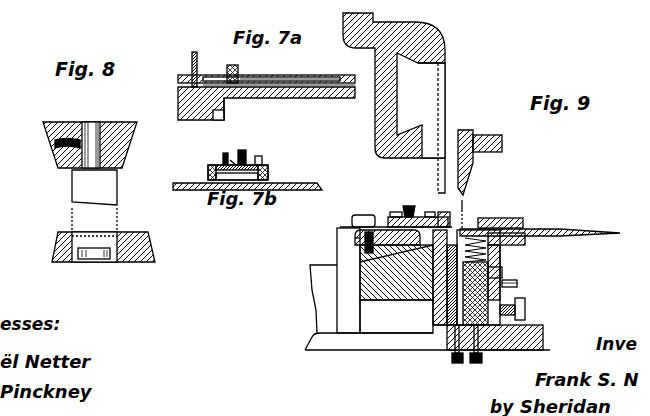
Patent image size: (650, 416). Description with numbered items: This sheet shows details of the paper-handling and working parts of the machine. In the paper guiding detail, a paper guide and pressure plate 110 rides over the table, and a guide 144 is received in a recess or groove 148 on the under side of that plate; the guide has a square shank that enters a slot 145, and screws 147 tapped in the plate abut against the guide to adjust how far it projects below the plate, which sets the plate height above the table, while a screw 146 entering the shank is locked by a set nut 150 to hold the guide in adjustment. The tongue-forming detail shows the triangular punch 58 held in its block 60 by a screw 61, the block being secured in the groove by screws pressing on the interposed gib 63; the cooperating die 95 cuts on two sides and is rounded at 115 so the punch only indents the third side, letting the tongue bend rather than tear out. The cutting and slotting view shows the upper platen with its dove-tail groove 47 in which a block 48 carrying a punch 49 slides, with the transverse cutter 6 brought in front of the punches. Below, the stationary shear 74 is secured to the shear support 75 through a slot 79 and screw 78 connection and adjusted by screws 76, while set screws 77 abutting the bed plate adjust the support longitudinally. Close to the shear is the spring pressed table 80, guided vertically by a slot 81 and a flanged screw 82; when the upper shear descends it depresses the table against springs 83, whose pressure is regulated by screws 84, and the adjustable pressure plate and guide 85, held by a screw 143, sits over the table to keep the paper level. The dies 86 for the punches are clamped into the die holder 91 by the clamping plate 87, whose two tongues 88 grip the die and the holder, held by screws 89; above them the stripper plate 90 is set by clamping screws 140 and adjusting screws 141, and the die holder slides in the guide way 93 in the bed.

In FIG. 9, the transverse cutter 6 is at (473, 175).
In FIG. 9, the dove-tail groove 47 is at (398, 105).
In FIG. 9, the blocks 48 is at (428, 86).
In FIG. 9, the punches 49 is at (438, 187).
In FIG. 8, the punch 58 is at (118, 190).
In FIG. 8, the block 60 is at (138, 126).
In FIG. 8, the screw 61 is at (58, 143).
In FIG. 8, the gib 63 is at (80, 122).
In FIG. 9, the stationary shear 74 is at (445, 277).
In FIG. 9, the shear support 75 is at (505, 350).
In FIG. 9, the screws 76 is at (457, 364).
In FIG. 9, the set screws 77 is at (526, 311).
In FIG. 9, the screw 78 is at (437, 335).
In FIG. 9, the slot 79 is at (420, 310).
In FIG. 9, the spring pressed table 80 is at (545, 237).
In FIG. 9, the slot 81 is at (502, 273).
In FIG. 9, the flanged screw 82 is at (518, 284).
In FIG. 9, the springs 83 is at (500, 249).
In FIG. 9, the screws 84 is at (478, 364).
In FIG. 9, the pressure plate and guide 85 is at (506, 219).
In FIG. 9, the dies 86 is at (463, 227).
In FIG. 9, the clamping plate 87 is at (384, 228).
In FIG. 9, the tongues 88 is at (362, 287).
In FIG. 9, the screws 89 is at (366, 264).
In FIG. 9, the stripper plate 90 is at (465, 208).
In FIG. 9, the die holder 91 is at (427, 289).
In FIG. 9, the guide way 93 is at (357, 243).
In FIG. 8, the die 95 is at (148, 233).
In FIG. 7A, the paper guide and pressure plate 110 is at (340, 76).
In FIG. 7B, the paper guide and pressure plate 110 is at (270, 172).
In FIG. 8, the rounded edge of die 115 is at (74, 235).
In FIG. 9, the clamping screws 140 is at (437, 214).
In FIG. 9, the adjusting screws 141 is at (412, 205).
In FIG. 7A, the screw 143 is at (227, 72).
In FIG. 7A, the guides 144 is at (240, 98).
In FIG. 7B, the guides 144 is at (200, 189).
In FIG. 7A, the slots 145 is at (333, 98).
In FIG. 7B, the slots 145 is at (228, 160).
In FIG. 7A, the screws 146 is at (240, 74).
In FIG. 7B, the screws 146 is at (270, 165).
In FIG. 7B, the screws 147 is at (262, 156).
In FIG. 7A, the recess or groove 148 is at (295, 92).
In FIG. 7B, the recess or groove 148 is at (210, 170).
In FIG. 7A, the set nuts 150 is at (207, 61).
In FIG. 7B, the set nuts 150 is at (245, 156).